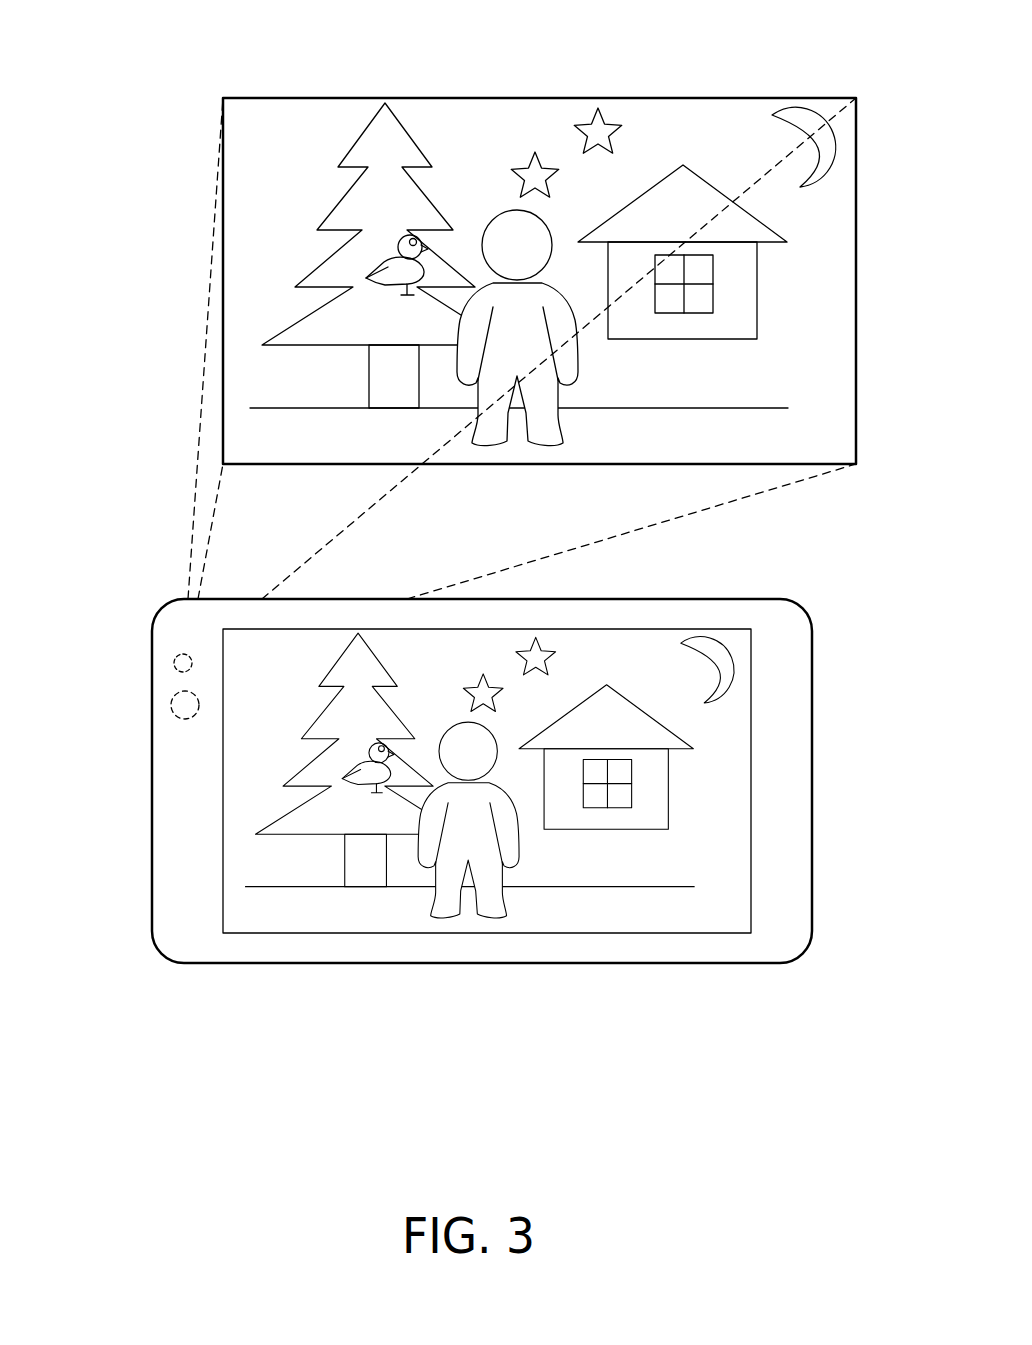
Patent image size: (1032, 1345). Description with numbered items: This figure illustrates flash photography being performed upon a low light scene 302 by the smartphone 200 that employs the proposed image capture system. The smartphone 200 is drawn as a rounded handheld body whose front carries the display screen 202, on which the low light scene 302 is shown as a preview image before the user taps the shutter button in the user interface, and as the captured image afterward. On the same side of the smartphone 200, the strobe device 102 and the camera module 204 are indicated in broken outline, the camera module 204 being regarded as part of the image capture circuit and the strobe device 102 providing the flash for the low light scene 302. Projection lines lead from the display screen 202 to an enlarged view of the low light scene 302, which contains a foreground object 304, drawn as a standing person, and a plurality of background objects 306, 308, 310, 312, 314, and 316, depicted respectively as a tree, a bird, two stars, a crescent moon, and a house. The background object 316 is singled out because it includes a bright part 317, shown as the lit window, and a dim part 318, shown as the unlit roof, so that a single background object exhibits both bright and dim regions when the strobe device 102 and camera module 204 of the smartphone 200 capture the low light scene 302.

The strobe device 102 is at (174, 663).
The smartphone 200 is at (151, 783).
The display screen 202 is at (752, 782).
The camera module 204 is at (171, 705).
The low light scene 302 is at (222, 330).
The foreground object 304 is at (565, 372).
The background object 306 is at (362, 137).
The background object 308 is at (386, 270).
The background object 310 is at (527, 162).
The background object 312 is at (605, 106).
The background object 314 is at (818, 113).
The background object 316 is at (758, 292).
The bright part 317 is at (697, 305).
The dim part 318 is at (716, 188).